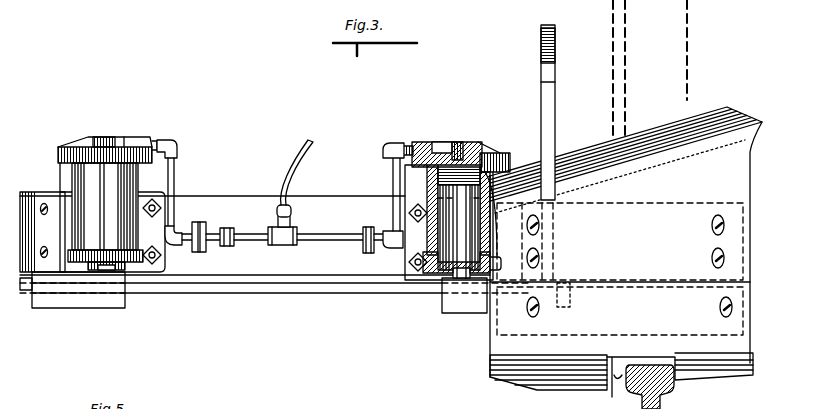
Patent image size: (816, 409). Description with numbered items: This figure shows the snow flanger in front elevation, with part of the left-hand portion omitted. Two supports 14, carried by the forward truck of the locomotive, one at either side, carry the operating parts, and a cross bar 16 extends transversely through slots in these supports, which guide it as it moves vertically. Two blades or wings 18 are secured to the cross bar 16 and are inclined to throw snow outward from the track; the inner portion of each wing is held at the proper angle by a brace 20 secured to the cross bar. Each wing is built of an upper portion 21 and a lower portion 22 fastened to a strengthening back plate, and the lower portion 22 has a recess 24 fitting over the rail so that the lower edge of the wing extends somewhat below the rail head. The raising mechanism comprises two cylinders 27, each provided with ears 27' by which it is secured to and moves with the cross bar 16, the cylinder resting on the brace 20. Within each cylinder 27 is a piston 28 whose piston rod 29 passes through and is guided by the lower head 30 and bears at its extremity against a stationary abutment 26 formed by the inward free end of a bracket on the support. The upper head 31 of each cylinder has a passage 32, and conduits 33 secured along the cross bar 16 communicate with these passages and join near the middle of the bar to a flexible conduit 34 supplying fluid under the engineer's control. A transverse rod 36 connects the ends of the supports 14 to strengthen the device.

The support 14 is at (554, 110).
The cross bar 16 is at (315, 200).
The blade or wing 18 is at (753, 245).
The brace 20 is at (38, 192).
The upper portion of wing 21 is at (626, 154).
The lower portion of wing 22 is at (621, 367).
The recess 24 is at (609, 377).
The abutment 26 is at (110, 302).
The cylinder 27 is at (276, 242).
The ear 27' is at (166, 280).
The piston 28 is at (481, 153).
The piston rod 29 is at (453, 280).
The lower head 30 is at (95, 253).
The upper head 31 is at (63, 148).
The passage 32 is at (432, 148).
The conduit 33 is at (173, 193).
The flexible conduit 34 is at (289, 172).
The transverse rod 36 is at (317, 291).